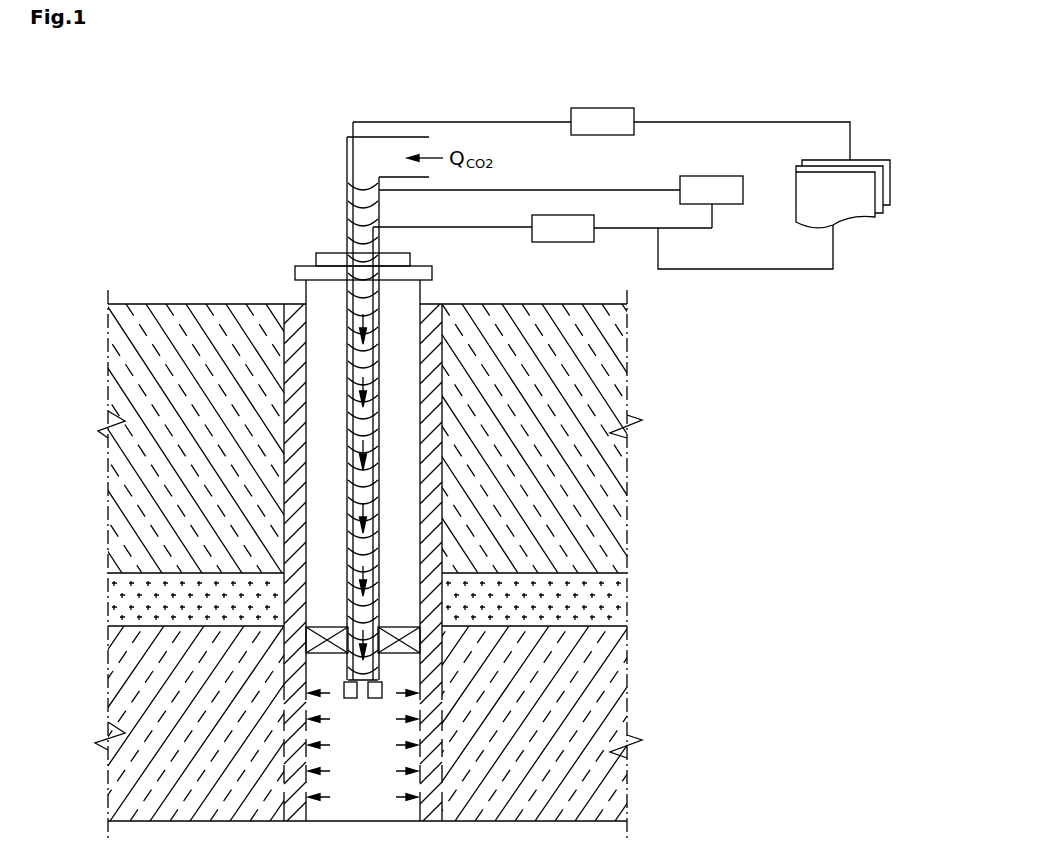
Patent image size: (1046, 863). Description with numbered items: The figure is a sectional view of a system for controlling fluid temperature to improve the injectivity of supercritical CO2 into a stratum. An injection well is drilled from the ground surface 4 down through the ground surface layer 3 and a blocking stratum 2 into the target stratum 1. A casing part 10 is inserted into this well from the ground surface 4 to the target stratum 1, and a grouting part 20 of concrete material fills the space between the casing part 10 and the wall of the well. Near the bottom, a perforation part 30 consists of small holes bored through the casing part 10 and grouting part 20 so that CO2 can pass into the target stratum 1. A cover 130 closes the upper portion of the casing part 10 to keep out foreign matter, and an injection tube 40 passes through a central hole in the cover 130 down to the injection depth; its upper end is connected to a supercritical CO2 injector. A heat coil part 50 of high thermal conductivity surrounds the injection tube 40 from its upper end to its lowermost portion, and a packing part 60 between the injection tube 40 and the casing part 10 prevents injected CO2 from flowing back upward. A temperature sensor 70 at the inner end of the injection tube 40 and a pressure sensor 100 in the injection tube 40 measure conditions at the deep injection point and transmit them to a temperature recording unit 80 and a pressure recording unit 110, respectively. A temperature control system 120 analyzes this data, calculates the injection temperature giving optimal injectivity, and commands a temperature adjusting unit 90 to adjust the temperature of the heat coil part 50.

The target stratum 1 is at (122, 686).
The blocking stratum 2 is at (125, 597).
The ground surface layer 3 is at (135, 345).
The ground surface 4 is at (175, 303).
The casing part 10 is at (420, 385).
The grouting part 20 is at (430, 470).
The perforation part 30 is at (305, 778).
The injection tube 40 is at (355, 393).
The heat coil part 50 is at (362, 482).
The packing part 60 is at (395, 645).
The temperature sensor 70 is at (384, 682).
The temperature recording unit 80 is at (557, 243).
The temperature adjusting unit 90 is at (708, 184).
The pressure sensor 100 is at (345, 681).
The pressure recording unit 110 is at (608, 113).
The temperature control system 120 is at (853, 202).
The cover 130 is at (318, 256).